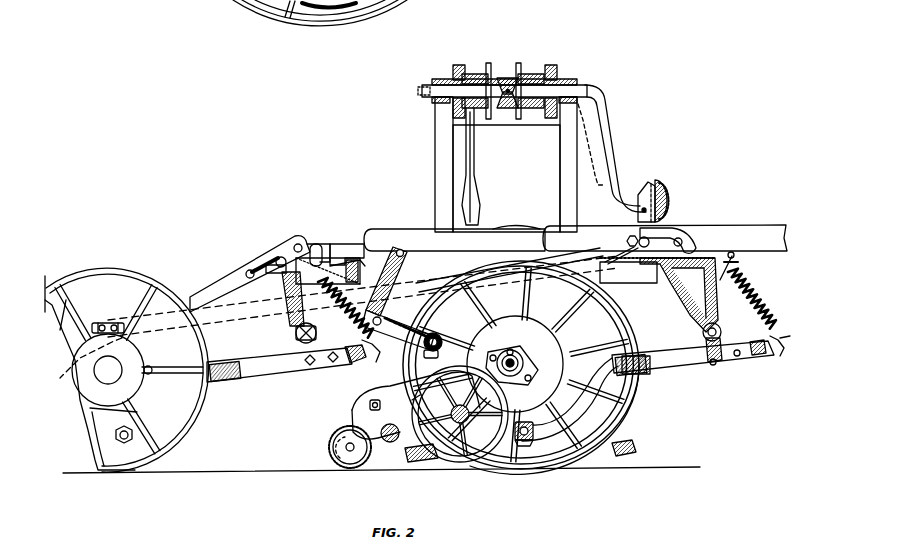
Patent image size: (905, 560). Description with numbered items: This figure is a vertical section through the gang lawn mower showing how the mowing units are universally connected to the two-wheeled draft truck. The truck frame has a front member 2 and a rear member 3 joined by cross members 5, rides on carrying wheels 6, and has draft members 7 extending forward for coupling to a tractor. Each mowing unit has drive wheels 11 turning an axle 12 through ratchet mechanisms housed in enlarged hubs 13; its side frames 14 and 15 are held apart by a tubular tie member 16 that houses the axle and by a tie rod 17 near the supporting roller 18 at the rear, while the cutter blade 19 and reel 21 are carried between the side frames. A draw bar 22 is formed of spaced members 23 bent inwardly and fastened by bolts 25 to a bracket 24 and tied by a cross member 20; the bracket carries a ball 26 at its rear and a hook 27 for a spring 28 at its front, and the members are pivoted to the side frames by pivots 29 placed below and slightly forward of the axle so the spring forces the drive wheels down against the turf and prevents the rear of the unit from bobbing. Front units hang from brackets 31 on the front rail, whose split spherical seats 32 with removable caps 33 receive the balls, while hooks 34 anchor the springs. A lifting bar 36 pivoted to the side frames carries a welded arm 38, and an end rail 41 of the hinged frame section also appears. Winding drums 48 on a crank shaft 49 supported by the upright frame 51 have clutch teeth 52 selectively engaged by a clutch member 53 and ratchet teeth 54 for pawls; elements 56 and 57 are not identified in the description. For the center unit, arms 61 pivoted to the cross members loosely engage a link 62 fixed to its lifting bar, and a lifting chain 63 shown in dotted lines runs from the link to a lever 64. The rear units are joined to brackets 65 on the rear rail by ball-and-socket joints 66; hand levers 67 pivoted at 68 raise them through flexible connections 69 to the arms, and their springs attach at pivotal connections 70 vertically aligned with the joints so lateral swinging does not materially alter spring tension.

The front member 2 is at (656, 272).
The rear member 3 is at (362, 272).
The cross member 5 is at (418, 228).
The carrying wheel 6 is at (622, 413).
The draft member 7 is at (740, 236).
The drive wheel 11 is at (112, 268).
The axle 12 is at (520, 365).
The enlarged hub 13 is at (124, 355).
The side frame 14 is at (392, 412).
The side frame 15 is at (92, 322).
The tubular tie member 16 is at (510, 350).
The tie rod 17 is at (390, 442).
The supporting roller 18 is at (328, 449).
The cutter blade 19 is at (430, 464).
The cross member 20 is at (622, 375).
The reel 21 is at (470, 458).
The draw bar 22 is at (243, 385).
The spaced apart member 23 is at (180, 404).
The bracket 24 is at (352, 365).
The bolt 25 is at (333, 362).
The ball 26 is at (704, 336).
The hook 27 is at (372, 344).
The spring 28 is at (352, 300).
The pivot 29 is at (119, 446).
The bracket 31 is at (692, 248).
The spherical seat 32 is at (700, 322).
The removable cap 33 is at (312, 333).
The hook 34 is at (735, 262).
The lifting bar 36 is at (444, 346).
The arm 38 is at (96, 366).
The end rail 41 is at (452, 272).
The winding drum 48 is at (480, 70).
The crank shaft 49 is at (590, 90).
The upright frame 51 is at (553, 143).
The clutch teeth 52 is at (486, 118).
The clutch member 53 is at (507, 80).
The ratchet teeth 54 is at (456, 66).
The gear segment 56 is at (664, 188).
The bracket 57 is at (645, 195).
The arm 61 is at (345, 260).
The link 62 is at (388, 306).
The lifting chain 63 is at (626, 243).
The lever 64 is at (552, 230).
The bracket 65 is at (284, 300).
The ball-and-socket joint 66 is at (296, 334).
The hand lever 67 is at (282, 258).
The pivot 68 is at (299, 244).
The flexible connection 69 is at (148, 322).
The pivotal connection 70 is at (328, 255).